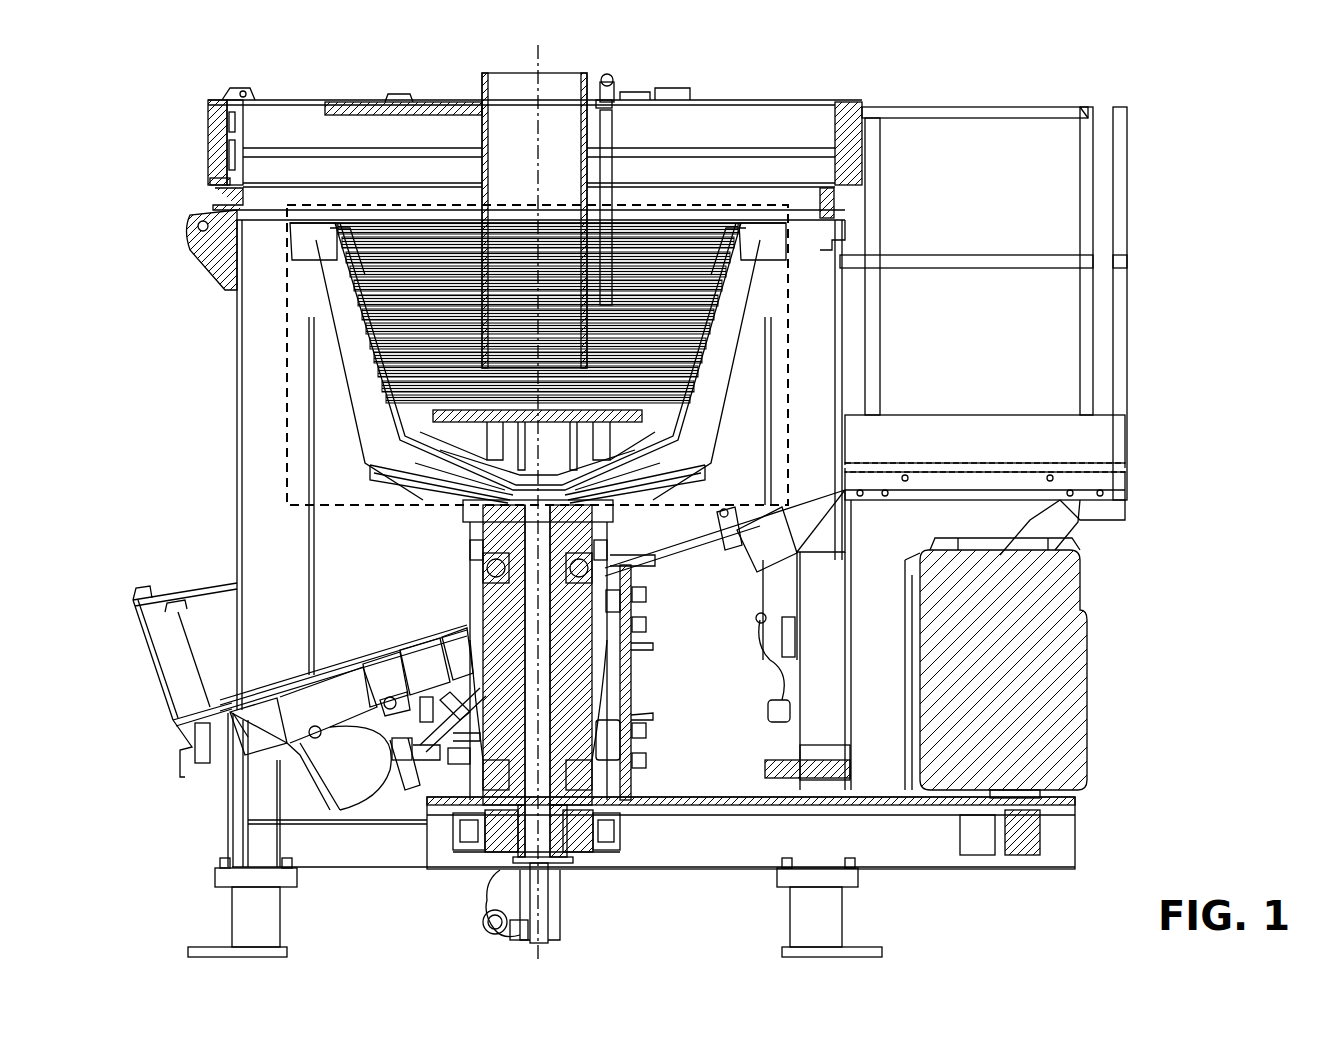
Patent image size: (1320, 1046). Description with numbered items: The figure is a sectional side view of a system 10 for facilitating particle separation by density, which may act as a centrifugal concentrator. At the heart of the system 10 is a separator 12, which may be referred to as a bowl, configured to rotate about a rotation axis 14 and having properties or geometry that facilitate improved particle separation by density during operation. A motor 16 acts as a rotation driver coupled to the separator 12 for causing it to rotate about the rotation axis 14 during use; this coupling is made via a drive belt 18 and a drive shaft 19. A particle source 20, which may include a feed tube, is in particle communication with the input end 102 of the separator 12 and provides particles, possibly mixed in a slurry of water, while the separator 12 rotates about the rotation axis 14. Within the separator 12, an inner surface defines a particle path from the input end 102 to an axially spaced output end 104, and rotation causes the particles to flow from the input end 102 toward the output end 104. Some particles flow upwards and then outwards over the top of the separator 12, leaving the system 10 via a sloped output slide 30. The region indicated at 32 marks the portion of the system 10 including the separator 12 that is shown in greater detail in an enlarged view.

The system 10 is at (280, 86).
The separator 12 is at (356, 362).
The rotation axis 14 is at (541, 63).
The motor 16 is at (1088, 662).
The drive belt 18 is at (900, 834).
The drive shaft 19 is at (566, 830).
The particle source 20 is at (503, 72).
The sloped output slide 30 is at (262, 662).
The portion of the system 32 is at (287, 318).
The input end 102 is at (430, 410).
The output end 104 is at (690, 224).